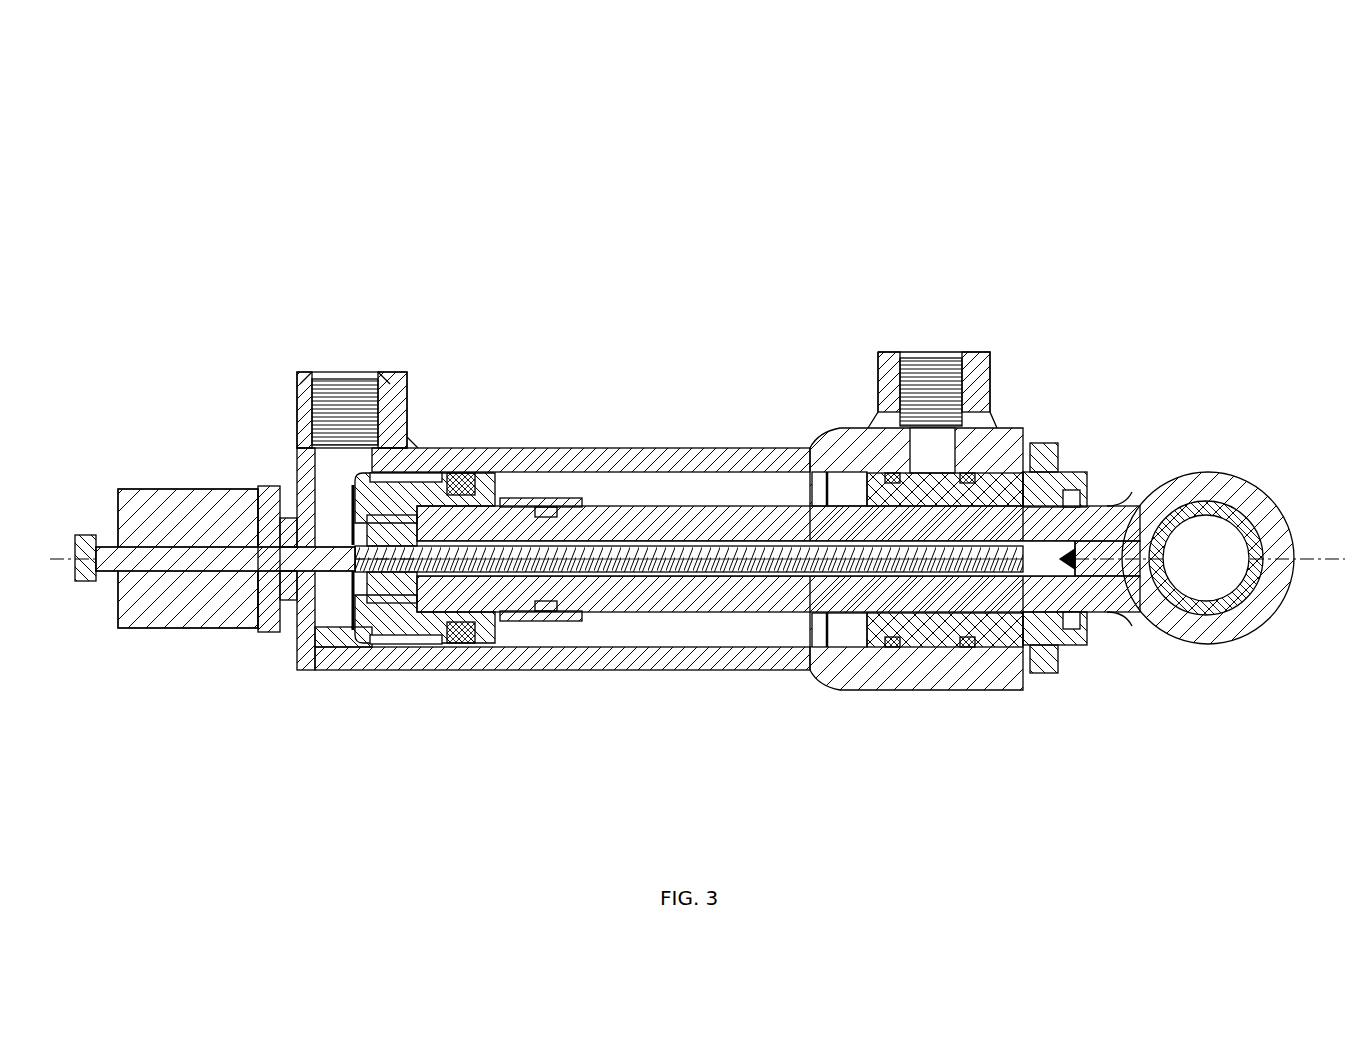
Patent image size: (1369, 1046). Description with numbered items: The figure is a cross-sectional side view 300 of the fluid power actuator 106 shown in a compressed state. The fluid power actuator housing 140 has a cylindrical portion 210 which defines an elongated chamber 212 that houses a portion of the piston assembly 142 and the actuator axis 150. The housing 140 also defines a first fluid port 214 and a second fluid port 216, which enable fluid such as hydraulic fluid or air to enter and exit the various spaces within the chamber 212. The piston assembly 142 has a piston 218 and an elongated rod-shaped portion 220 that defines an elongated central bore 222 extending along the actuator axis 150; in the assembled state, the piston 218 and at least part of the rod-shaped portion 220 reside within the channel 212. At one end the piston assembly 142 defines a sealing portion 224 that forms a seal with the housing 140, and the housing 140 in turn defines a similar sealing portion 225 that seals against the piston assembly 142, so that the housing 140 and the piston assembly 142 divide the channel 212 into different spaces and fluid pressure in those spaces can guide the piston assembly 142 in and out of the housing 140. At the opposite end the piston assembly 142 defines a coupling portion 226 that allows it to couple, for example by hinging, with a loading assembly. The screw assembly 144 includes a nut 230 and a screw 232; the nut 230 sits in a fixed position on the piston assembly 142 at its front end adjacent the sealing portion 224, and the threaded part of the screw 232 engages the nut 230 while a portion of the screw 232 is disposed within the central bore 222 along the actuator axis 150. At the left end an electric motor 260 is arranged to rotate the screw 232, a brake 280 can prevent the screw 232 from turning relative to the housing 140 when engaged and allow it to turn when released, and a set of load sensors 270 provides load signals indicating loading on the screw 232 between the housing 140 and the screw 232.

The cross-sectional side view 300 is at (1249, 153).
The fluid power actuator 106 is at (1006, 234).
The fluid power actuator housing 140 is at (570, 309).
The piston assembly 142 is at (728, 626).
The screw assembly 144 is at (250, 704).
The actuator axis 150 is at (1318, 562).
The cylindrical portion 210 is at (555, 448).
The elongated chamber 212 is at (666, 639).
The first fluid port 214 is at (337, 341).
The second fluid port 216 is at (908, 326).
The piston 218 is at (347, 612).
The rod-shaped portion 220 is at (752, 505).
The central bore 222 is at (1120, 594).
The sealing portion 224 is at (355, 483).
The sealing portion 225 is at (1072, 471).
The coupling portion 226 is at (1200, 469).
The nut 230 is at (397, 602).
The screw 232 is at (772, 576).
The electric motor 260 is at (132, 497).
The brake 280 is at (188, 558).
The set of load sensors 270 is at (279, 481).